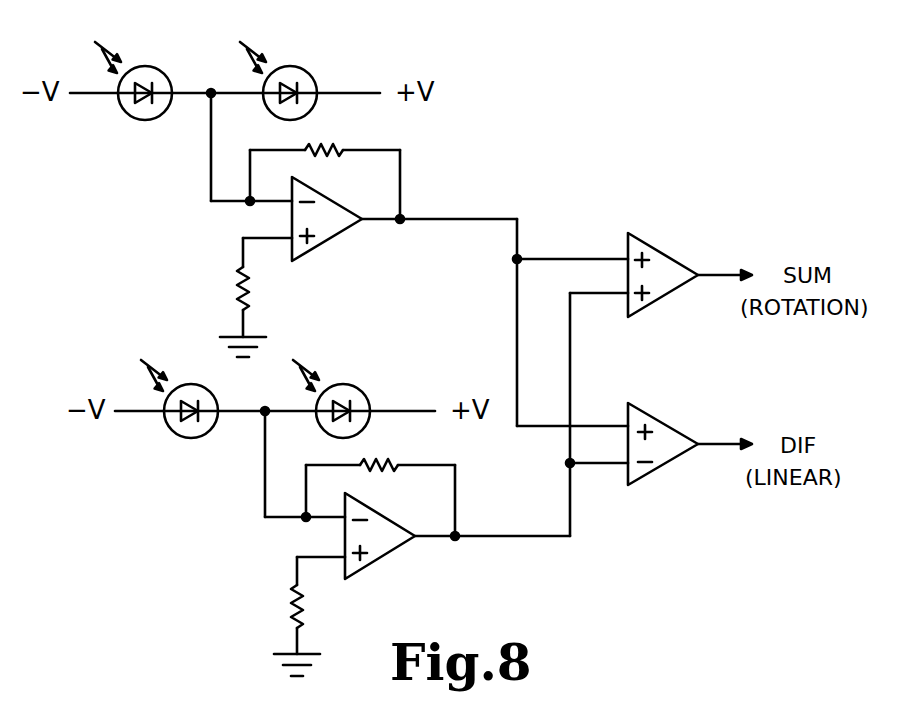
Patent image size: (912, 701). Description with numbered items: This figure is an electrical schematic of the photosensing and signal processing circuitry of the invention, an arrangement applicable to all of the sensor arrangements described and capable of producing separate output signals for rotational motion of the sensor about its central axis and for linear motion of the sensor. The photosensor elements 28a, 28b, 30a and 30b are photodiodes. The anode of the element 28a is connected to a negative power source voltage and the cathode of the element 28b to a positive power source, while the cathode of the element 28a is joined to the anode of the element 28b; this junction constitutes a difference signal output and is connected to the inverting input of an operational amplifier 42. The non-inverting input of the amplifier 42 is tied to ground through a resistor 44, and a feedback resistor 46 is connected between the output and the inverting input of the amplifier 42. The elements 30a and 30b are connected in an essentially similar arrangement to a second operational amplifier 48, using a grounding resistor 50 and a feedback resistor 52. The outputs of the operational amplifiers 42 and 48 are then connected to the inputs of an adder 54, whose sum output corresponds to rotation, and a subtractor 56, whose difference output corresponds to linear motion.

The photosensor element 28a is at (143, 66).
The photosensor element 28b is at (288, 66).
The photosensor element 30a is at (189, 438).
The photosensor element 30b is at (345, 384).
The operational amplifier 42 is at (333, 240).
The resistor 44 is at (238, 285).
The feedback resistor 46 is at (330, 141).
The operational amplifier 48 is at (386, 560).
The resistor 50 is at (290, 600).
The resistor 52 is at (385, 458).
The adder 54 is at (661, 252).
The subtractor 56 is at (665, 425).